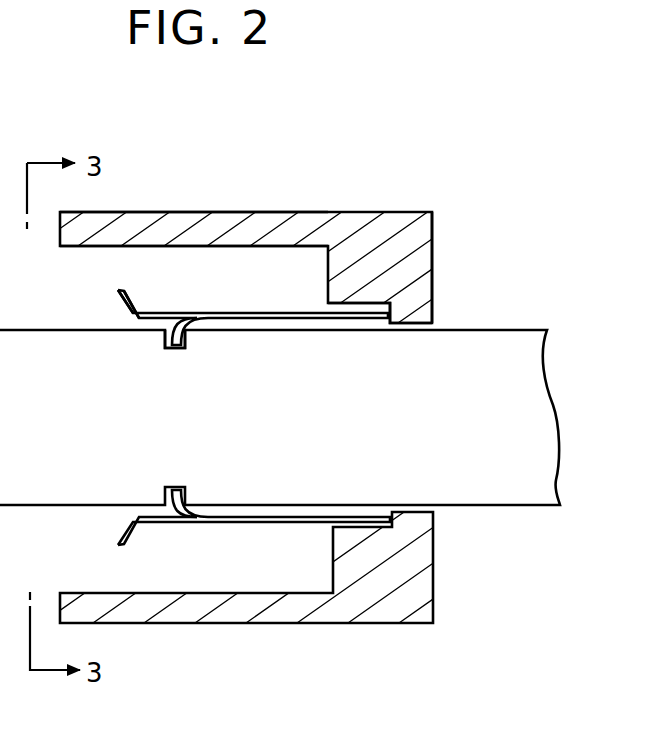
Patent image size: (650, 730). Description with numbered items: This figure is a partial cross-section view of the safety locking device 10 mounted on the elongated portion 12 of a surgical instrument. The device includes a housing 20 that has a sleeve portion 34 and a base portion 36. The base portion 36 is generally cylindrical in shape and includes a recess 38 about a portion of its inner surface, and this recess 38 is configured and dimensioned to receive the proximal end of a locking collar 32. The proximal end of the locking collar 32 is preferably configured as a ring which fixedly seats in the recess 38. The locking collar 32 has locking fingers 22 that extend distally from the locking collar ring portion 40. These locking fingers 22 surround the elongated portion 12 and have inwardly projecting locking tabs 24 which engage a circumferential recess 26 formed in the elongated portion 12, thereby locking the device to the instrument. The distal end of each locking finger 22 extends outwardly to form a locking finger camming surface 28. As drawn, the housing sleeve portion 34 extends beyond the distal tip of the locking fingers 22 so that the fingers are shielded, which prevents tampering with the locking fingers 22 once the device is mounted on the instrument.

The connector assembly 10 is at (436, 168).
The elongated portion 12 is at (485, 329).
The housing 20 is at (379, 211).
The locking fingers 22 is at (215, 328).
The locking tabs 24 is at (203, 334).
The circumferential recess 26 is at (190, 342).
The locking finger camming surface 28 is at (115, 294).
The locking collar 32 is at (288, 533).
The sleeve portion 34 is at (226, 199).
The base portion 36 is at (420, 235).
The recess 38 is at (360, 298).
The locking collar ring portion 40 is at (350, 321).